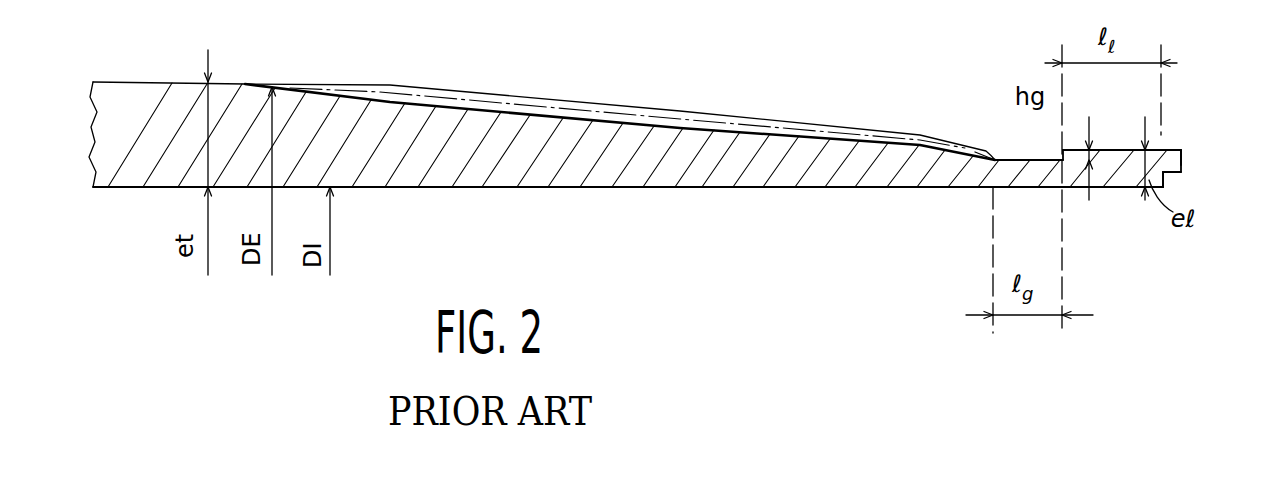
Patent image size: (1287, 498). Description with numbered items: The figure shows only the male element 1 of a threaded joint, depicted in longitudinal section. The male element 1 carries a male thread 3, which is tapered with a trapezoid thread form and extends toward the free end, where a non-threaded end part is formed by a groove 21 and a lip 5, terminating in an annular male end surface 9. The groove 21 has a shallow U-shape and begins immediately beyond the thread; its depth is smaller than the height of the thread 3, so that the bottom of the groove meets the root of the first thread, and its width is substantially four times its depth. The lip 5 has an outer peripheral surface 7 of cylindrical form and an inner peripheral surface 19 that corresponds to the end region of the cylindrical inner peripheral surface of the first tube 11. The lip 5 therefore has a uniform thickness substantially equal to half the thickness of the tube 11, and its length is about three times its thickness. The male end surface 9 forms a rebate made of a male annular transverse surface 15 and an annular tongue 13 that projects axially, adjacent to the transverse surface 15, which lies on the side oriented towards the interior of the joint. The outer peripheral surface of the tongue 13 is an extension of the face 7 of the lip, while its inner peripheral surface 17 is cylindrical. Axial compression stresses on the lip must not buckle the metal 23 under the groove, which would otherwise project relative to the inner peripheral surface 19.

The male element 1 is at (723, 110).
The male thread 3 is at (517, 98).
The lip 5 is at (1113, 167).
The outer peripheral surface 7 is at (1118, 148).
The annular male end surface 9 is at (1189, 161).
The first tube 11 is at (136, 103).
The annular tongue 13 is at (1173, 150).
The male annular transverse surface 15 is at (1163, 178).
The inner peripheral surface of the tongue 17 is at (1165, 171).
The inner peripheral surface 19 is at (753, 188).
The groove 21 is at (1013, 155).
The metal under the groove 23 is at (1001, 186).